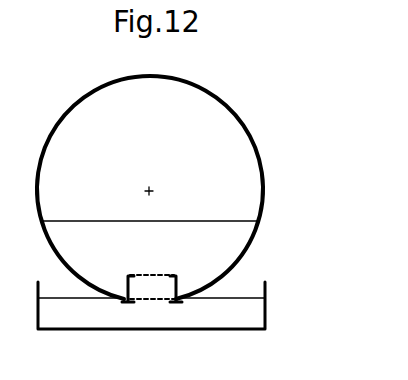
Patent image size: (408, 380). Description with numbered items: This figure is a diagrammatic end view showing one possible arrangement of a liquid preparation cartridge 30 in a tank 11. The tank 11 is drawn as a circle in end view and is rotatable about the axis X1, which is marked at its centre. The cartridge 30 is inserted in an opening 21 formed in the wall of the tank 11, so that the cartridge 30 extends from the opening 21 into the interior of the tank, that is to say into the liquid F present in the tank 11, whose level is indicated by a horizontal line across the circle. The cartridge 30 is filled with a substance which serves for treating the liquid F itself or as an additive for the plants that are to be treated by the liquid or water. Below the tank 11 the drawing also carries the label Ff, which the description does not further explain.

The tank 11 is at (242, 118).
The axis X1 is at (152, 188).
The opening 21 is at (122, 291).
The liquid F is at (240, 233).
The fluid in container Ff is at (253, 312).
The liquid preparation cartridge 30 is at (150, 292).